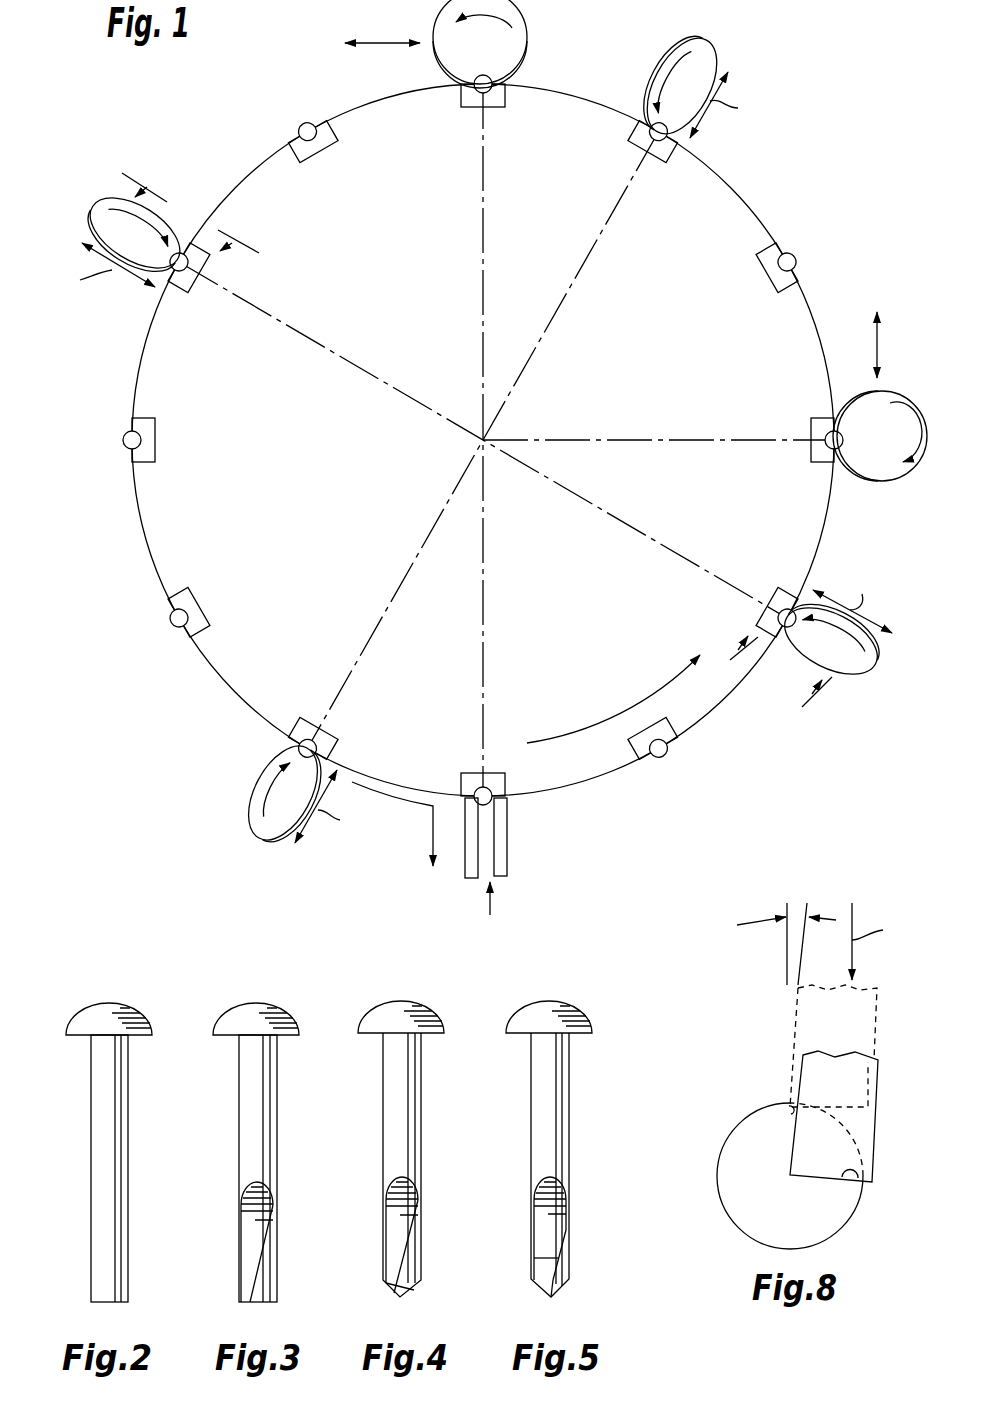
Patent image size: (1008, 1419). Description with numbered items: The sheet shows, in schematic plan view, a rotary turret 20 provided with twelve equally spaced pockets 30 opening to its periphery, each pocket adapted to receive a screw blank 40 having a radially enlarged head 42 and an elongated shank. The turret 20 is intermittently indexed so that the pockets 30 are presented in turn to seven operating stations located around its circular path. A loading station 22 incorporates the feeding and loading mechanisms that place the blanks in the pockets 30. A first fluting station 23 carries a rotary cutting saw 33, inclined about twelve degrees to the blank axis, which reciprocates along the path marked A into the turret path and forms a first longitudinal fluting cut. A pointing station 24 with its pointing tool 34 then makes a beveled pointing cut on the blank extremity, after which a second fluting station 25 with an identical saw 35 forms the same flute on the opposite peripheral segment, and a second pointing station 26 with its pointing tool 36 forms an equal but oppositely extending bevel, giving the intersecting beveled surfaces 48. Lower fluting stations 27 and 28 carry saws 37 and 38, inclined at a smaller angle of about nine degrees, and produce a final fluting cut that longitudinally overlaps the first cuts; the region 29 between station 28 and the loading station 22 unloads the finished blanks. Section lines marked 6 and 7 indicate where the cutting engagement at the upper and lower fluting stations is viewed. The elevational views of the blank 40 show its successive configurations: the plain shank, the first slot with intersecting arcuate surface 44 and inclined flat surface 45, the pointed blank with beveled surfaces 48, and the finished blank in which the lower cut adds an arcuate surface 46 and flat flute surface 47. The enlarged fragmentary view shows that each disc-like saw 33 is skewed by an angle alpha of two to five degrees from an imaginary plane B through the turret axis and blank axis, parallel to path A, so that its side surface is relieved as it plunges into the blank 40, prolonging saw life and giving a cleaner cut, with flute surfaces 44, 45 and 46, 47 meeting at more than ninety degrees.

In FIG. 1, the rotary turret 20 is at (758, 199).
In FIG. 1, the loading station 22 is at (518, 817).
In FIG. 1, the first fluting station 23 is at (849, 650).
In FIG. 1, the pointing station 24 is at (891, 426).
In FIG. 1, the second fluting station 25 is at (699, 72).
In FIG. 1, the pointing station 26 is at (466, 44).
In FIG. 1, the lower fluting station 27 is at (106, 226).
In FIG. 1, the lower fluting station 28 is at (272, 797).
In FIG. 1, the unloading region 29 is at (433, 820).
In FIG. 1, the pockets 30 is at (793, 275).
In FIG. 1, the rotary cutting saw 33 is at (872, 660).
In FIG. 8, the rotary cutting saw 33 is at (876, 1120).
In FIG. 1, the grinding wheel 34 is at (910, 396).
In FIG. 1, the fluting saw 35 is at (710, 62).
In FIG. 1, the grinding wheel 36 is at (522, 47).
In FIG. 1, the fluting saw 37 is at (110, 203).
In FIG. 1, the fluting saw 38 is at (278, 750).
In FIG. 2, the screw blank 40 is at (87, 1141).
In FIG. 3, the screw blank 40 is at (235, 1141).
In FIG. 4, the screw blank 40 is at (397, 1146).
In FIG. 5, the screw blank 40 is at (537, 1138).
In FIG. 8, the screw blank 40 is at (721, 1147).
In FIG. 2, the head 42 is at (77, 1022).
In FIG. 3, the head 42 is at (224, 1022).
In FIG. 4, the head 42 is at (370, 1022).
In FIG. 5, the head 42 is at (520, 1022).
In FIG. 3, the arcuate flute surface 44 is at (248, 1220).
In FIG. 4, the arcuate flute surface 44 is at (395, 1218).
In FIG. 5, the arcuate flute surface 44 is at (545, 1207).
In FIG. 8, the arcuate flute surface 44 is at (853, 1184).
In FIG. 3, the flat flute surface 45 is at (262, 1255).
In FIG. 4, the flat flute surface 45 is at (412, 1248).
In FIG. 5, the flat flute surface 45 is at (562, 1230).
In FIG. 8, the flat flute surface 45 is at (790, 1108).
In FIG. 5, the arcuate surface 46 is at (542, 1266).
In FIG. 5, the flat flute surface 47 is at (550, 1272).
In FIG. 4, the beveled surfaces 48 is at (412, 1290).
In FIG. 1, the section line 6- 6 is at (775, 677).
In FIG. 1, the section line 7- 7 is at (190, 205).